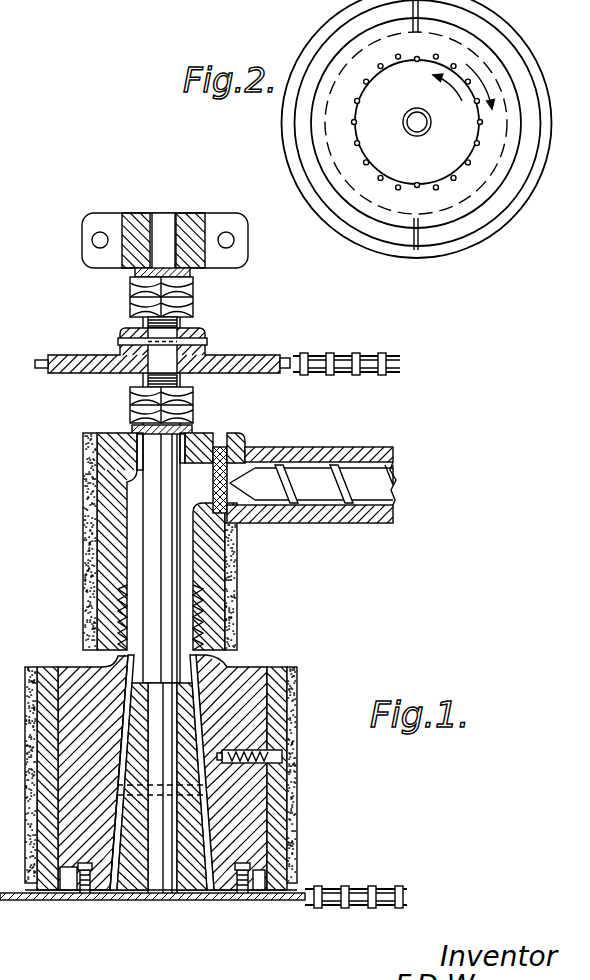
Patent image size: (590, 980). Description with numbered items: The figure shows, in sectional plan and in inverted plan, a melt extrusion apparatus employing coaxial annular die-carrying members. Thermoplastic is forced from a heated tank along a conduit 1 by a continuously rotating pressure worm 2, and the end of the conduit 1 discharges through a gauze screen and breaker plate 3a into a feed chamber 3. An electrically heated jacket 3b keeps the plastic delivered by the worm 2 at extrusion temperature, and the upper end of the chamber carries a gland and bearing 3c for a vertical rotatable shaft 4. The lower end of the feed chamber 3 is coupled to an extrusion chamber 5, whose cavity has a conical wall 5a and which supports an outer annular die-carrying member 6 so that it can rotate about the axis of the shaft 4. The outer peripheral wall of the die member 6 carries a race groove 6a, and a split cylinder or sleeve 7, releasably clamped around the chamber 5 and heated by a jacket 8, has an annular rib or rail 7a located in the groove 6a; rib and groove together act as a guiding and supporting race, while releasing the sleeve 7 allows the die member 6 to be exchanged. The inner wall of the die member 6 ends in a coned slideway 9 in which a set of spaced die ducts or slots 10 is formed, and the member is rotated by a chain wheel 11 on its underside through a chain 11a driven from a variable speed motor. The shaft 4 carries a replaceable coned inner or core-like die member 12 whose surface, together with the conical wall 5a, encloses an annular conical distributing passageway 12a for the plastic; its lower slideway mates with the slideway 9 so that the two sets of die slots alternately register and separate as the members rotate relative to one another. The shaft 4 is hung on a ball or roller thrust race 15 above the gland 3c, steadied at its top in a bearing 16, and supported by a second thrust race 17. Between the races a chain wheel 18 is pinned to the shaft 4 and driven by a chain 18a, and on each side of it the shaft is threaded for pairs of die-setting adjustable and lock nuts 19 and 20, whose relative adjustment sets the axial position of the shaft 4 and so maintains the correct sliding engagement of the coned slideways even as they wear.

In FIG. 1, the conduit 1 is at (340, 455).
In FIG. 1, the pressure worm 2 is at (330, 497).
In FIG. 1, the feed chamber 3 is at (212, 550).
In FIG. 1, the gauze screen and breaker plate 3a is at (236, 450).
In FIG. 1, the electrically heated jacket 3b is at (238, 600).
In FIG. 1, the gland and bearing 3c is at (200, 437).
In FIG. 2, the vertical rotatable shaft 4 is at (421, 118).
In FIG. 1, the vertical rotatable shaft 4 is at (150, 537).
In FIG. 1, the extrusion chamber 5 is at (245, 668).
In FIG. 1, the conical wall 5a is at (197, 715).
In FIG. 2, the outer annular die-carrying member 6 is at (348, 162).
In FIG. 1, the outer annular die-carrying member 6 is at (260, 857).
In FIG. 1, the race groove 6a is at (253, 874).
In FIG. 2, the split cylinder or sleeve 7 is at (310, 157).
In FIG. 1, the split cylinder or sleeve 7 is at (278, 788).
In FIG. 1, the annular rib or rail 7a is at (82, 897).
In FIG. 2, the jacket 8 is at (311, 48).
In FIG. 1, the jacket 8 is at (300, 728).
In FIG. 2, the annular bevelled or coned slideway 9 is at (370, 172).
In FIG. 1, the annular bevelled or coned slideway 9 is at (225, 897).
In FIG. 2, the die ducts or slots 10 is at (354, 108).
In FIG. 1, the chain wheel 11 is at (276, 900).
In FIG. 1, the chain 11a is at (382, 888).
In FIG. 2, the inner or core-like die member 12 is at (443, 163).
In FIG. 1, the inner or core-like die member 12 is at (132, 891).
In FIG. 1, the annular conical distributing passageway 12a is at (120, 763).
In FIG. 1, the ball or roller thrust race 15 is at (132, 430).
In FIG. 1, the bearing 16 is at (148, 213).
In FIG. 1, the second thrust race 17 is at (135, 274).
In FIG. 1, the chain wheel 18 is at (80, 356).
In FIG. 1, the chain 18a is at (349, 352).
In FIG. 1, the die-setting adjustable and lock nuts 19 is at (186, 288).
In FIG. 1, the die-setting adjustable and lock nuts 20 is at (140, 398).